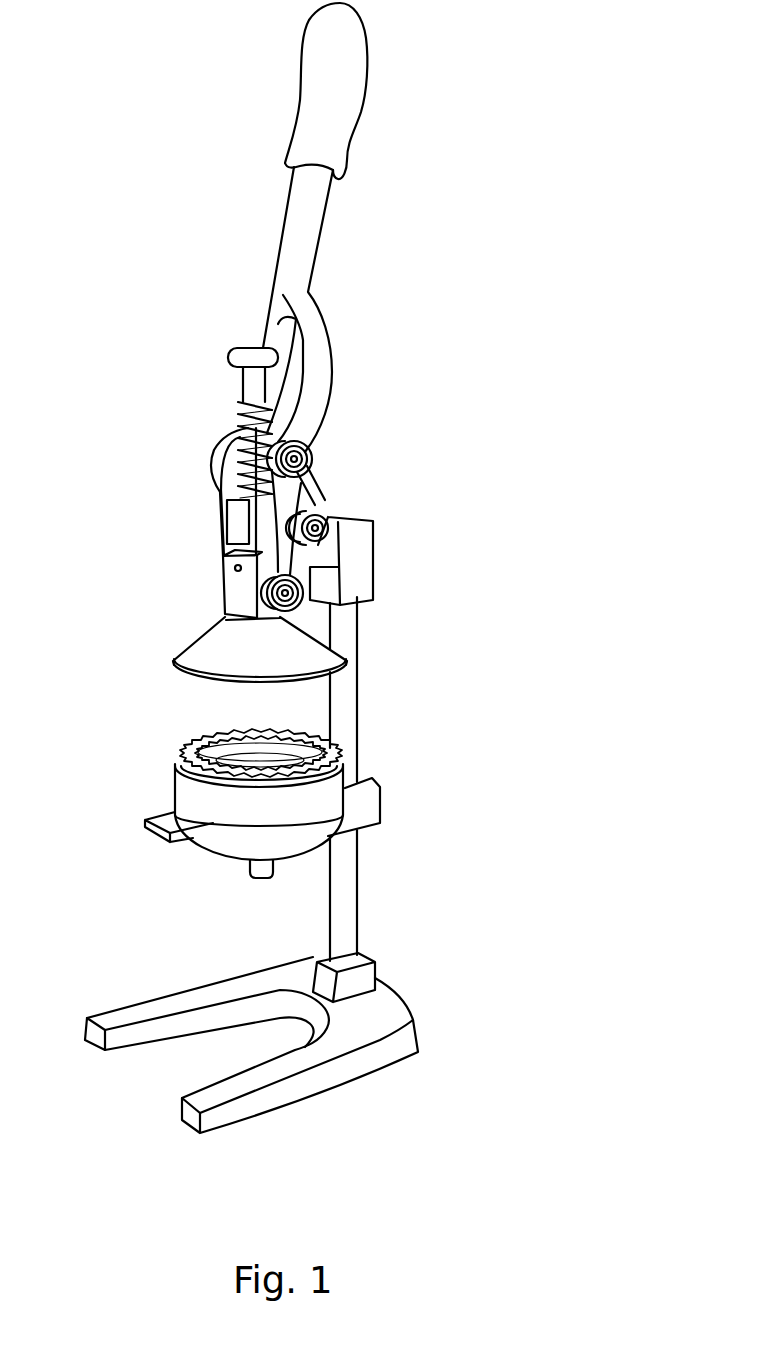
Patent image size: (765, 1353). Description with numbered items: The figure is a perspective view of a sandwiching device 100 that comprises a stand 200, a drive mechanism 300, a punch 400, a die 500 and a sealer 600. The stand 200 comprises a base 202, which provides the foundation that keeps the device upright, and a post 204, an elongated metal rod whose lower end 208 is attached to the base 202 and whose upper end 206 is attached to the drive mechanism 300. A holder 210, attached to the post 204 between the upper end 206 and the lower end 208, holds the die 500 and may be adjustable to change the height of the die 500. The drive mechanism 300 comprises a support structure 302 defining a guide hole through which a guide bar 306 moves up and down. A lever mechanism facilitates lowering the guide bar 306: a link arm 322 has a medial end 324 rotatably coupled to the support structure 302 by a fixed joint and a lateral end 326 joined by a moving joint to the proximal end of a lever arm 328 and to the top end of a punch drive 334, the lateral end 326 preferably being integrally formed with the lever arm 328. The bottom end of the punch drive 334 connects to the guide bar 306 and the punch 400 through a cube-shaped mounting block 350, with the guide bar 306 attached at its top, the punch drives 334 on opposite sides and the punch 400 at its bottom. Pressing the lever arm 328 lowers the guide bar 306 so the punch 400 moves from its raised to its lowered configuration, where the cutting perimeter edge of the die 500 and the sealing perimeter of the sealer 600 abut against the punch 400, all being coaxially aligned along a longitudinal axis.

The sandwiching device 100 is at (153, 153).
The stand 200 is at (423, 1082).
The base 202 is at (398, 1010).
The post 204 is at (350, 903).
The upper end 206 is at (372, 628).
The lower end 208 is at (316, 944).
The holder 210 is at (220, 848).
The drive mechanism 300 is at (360, 417).
The support structure 302 is at (362, 548).
The guide bar 306 is at (253, 391).
The link arm 322 is at (308, 502).
The medial end 324 is at (345, 507).
The lateral end 326 is at (328, 453).
The lever arm 328 is at (316, 218).
The punch drive 334 is at (225, 492).
The mounting block 350 is at (234, 580).
The punch 400 is at (210, 643).
The die 500 is at (180, 783).
The sealer 600 is at (186, 745).